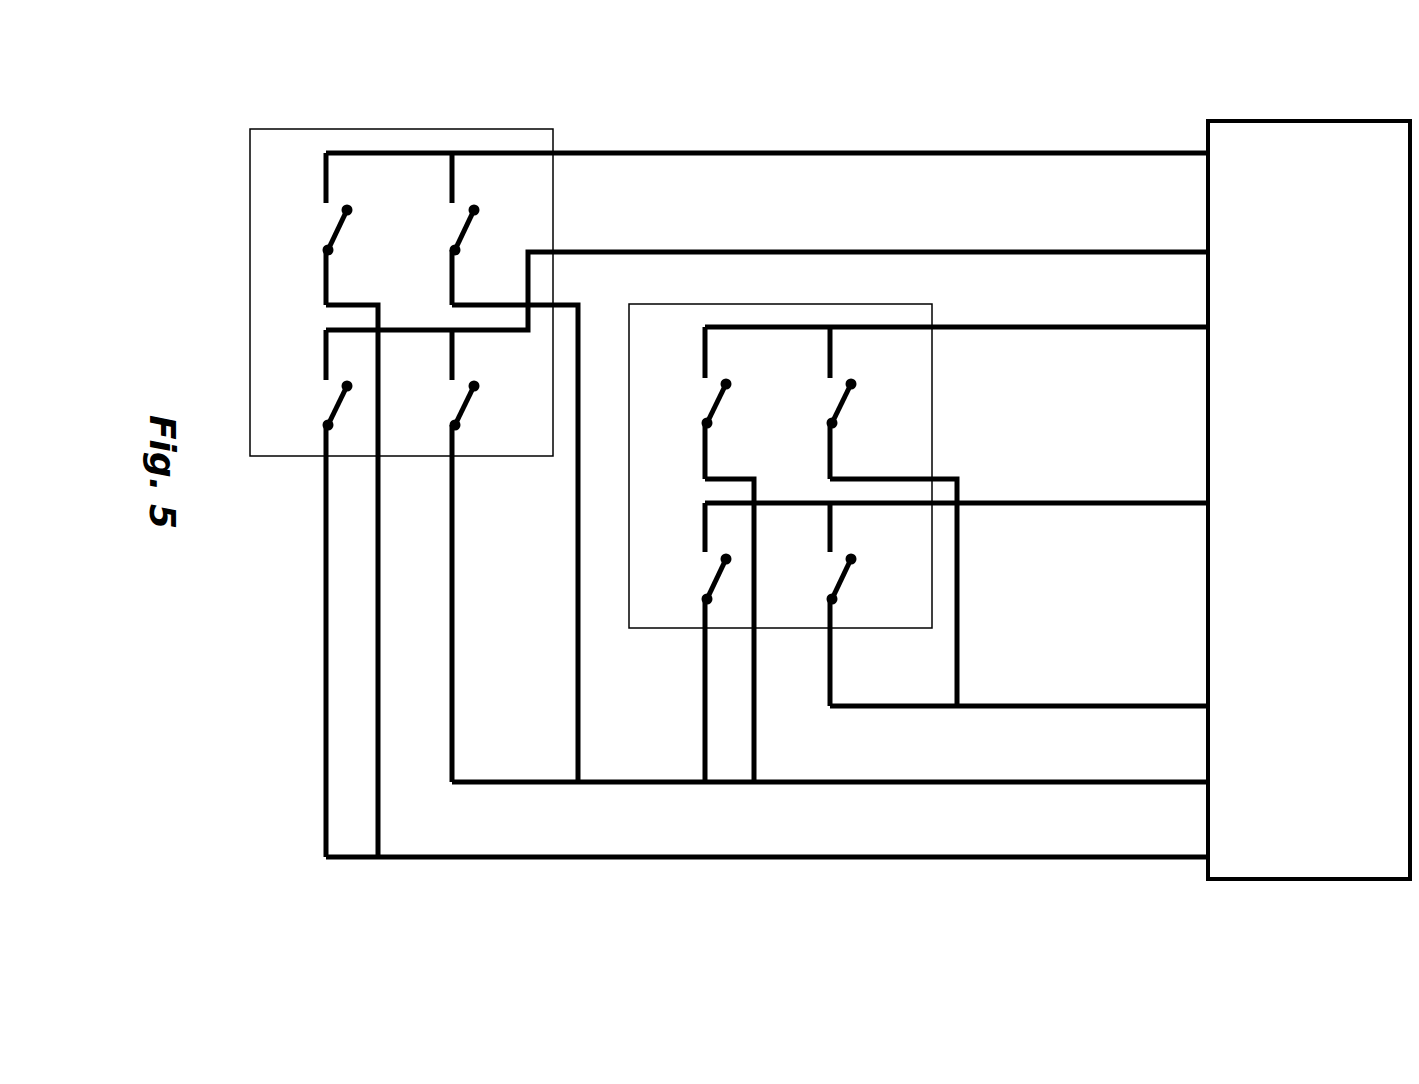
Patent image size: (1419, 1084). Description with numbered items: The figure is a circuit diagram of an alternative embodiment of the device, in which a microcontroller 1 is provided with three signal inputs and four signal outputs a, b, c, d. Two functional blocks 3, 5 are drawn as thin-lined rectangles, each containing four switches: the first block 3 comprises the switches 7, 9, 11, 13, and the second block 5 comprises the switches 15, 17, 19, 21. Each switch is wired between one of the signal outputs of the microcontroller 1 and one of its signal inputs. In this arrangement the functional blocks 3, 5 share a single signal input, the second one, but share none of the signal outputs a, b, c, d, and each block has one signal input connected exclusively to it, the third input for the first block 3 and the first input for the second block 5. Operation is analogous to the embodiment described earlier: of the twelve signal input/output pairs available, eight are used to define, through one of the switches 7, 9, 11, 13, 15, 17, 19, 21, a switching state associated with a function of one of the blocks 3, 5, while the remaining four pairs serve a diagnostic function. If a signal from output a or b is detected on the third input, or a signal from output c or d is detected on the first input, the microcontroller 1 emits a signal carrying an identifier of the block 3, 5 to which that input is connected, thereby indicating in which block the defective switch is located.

The microcontroller 1 is at (1309, 500).
The first functional block 3 is at (556, 290).
The second functional block 5 is at (936, 437).
The switch 7 is at (320, 229).
The switch 9 is at (320, 593).
The switch 11 is at (488, 556).
The switch 13 is at (488, 229).
The switch 15 is at (694, 403).
The switch 17 is at (694, 642).
The switch 19 is at (864, 604).
The switch 21 is at (864, 403).